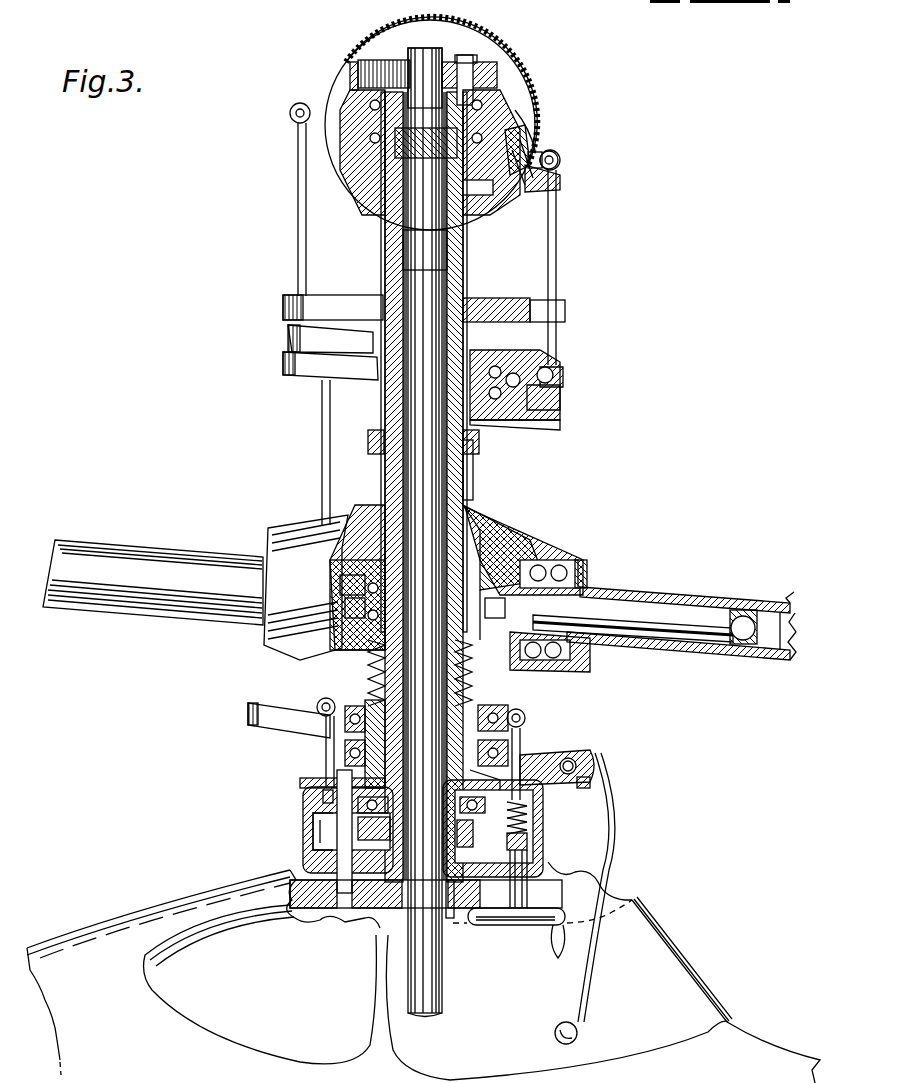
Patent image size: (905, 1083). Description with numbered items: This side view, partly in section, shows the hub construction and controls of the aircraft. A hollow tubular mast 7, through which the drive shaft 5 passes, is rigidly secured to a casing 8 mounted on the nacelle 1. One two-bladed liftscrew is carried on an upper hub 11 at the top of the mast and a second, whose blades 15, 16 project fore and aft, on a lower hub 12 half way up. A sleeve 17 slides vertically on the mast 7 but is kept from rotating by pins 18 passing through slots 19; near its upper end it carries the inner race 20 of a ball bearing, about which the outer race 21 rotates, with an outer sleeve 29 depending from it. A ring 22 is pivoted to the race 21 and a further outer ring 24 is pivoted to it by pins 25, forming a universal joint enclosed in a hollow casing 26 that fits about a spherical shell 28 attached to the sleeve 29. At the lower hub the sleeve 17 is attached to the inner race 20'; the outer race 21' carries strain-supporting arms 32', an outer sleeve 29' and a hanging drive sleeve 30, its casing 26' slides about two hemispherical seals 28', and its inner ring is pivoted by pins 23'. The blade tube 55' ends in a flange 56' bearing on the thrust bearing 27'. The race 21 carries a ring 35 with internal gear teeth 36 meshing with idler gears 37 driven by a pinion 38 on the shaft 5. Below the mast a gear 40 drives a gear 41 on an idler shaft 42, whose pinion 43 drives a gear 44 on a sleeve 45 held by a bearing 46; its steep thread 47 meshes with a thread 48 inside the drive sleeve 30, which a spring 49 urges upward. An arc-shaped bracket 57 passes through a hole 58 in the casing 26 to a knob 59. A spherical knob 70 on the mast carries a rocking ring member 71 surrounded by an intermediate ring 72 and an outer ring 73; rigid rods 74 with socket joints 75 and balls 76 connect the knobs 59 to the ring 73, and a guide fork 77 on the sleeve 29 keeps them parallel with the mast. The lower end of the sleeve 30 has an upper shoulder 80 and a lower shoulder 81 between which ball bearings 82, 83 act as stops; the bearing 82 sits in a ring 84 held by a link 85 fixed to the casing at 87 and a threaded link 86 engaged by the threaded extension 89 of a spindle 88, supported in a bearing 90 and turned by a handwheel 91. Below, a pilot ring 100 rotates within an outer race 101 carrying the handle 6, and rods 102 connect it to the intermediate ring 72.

The nacelle 1 is at (95, 915).
The drive shaft 5 is at (407, 398).
The handle 6 is at (583, 1006).
The hollow tubular mast 7 is at (447, 254).
The casing 8 is at (303, 860).
The upper hub 11 is at (410, 123).
The lower hub 12 is at (568, 540).
The blade 15 is at (135, 545).
The blade 16 is at (763, 600).
The sleeve 17 is at (463, 270).
The pins 18 is at (490, 360).
The slots 19 is at (456, 348).
The inner race 20 is at (416, 123).
The inner race 20' is at (419, 541).
The outer race 21 is at (397, 155).
The outer race 21' is at (351, 588).
The ring 22 is at (530, 132).
The pins 23' is at (408, 581).
The outer ring 24 is at (528, 148).
The pins 25 is at (522, 158).
The hollow casing 26 is at (546, 118).
The casing 26' is at (293, 573).
The thrust bearing 27' is at (573, 614).
The spherical shell 28 is at (357, 168).
The hemispherical seals 28' is at (339, 575).
The outer sleeve 29 is at (430, 362).
The outer sleeve 29' is at (490, 470).
The drive sleeve 30 is at (480, 685).
The strain-supporting arms 32' is at (644, 618).
The ring 35 is at (352, 70).
The gear teeth 36 is at (378, 65).
The idler gears 37 is at (490, 62).
The pinion 38 is at (445, 52).
The gear 40 is at (448, 918).
The gear 41 is at (372, 912).
The idler shaft 42 is at (340, 905).
The pinion 43 is at (358, 836).
The gear 44 is at (315, 824).
The sleeve 45 is at (383, 760).
The bearing 46 is at (358, 805).
The thread 47 is at (522, 722).
The thread 48 is at (508, 740).
The spring 49 is at (365, 678).
The tube 55' is at (806, 631).
The flange 56' is at (550, 547).
The bracket 57 is at (560, 170).
The hole 58 is at (545, 158).
The knob 59 is at (558, 160).
The spherical knob 70 is at (500, 322).
The ring member 71 is at (480, 412).
The intermediate ring 72 is at (288, 378).
The outer ring 73 is at (288, 336).
The rigid rods 74 is at (297, 234).
The socket joints 75 is at (289, 112).
The balls 76 is at (552, 370).
The guide fork 77 is at (283, 305).
The upper shoulder 80 is at (508, 705).
The lower shoulder 81 is at (300, 782).
The upper ball bearing 82 is at (526, 718).
The lower ball bearing 83 is at (345, 748).
The ring 84 is at (318, 702).
The link 85 is at (325, 740).
The link 86 is at (585, 750).
The attachment point 87 is at (323, 794).
The spindle 88 is at (528, 898).
The hollow threaded extension 89 is at (530, 828).
The bearing 90 is at (535, 862).
The handwheel 91 is at (500, 927).
The pilot ring 100 is at (545, 775).
The outer race 101 is at (262, 732).
The rods 102 is at (321, 436).